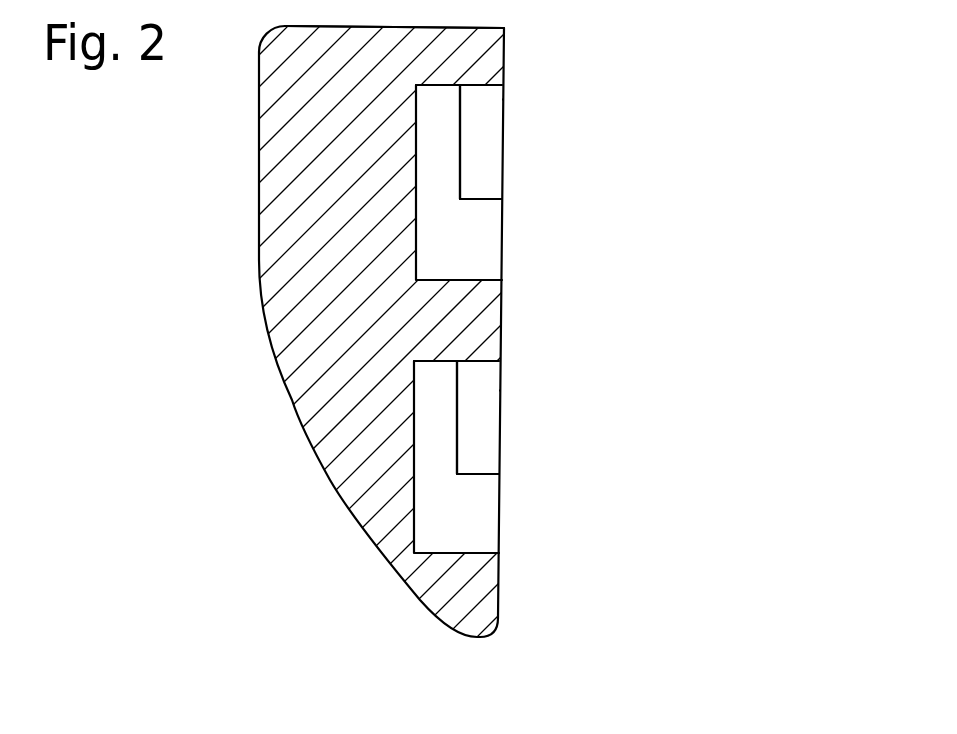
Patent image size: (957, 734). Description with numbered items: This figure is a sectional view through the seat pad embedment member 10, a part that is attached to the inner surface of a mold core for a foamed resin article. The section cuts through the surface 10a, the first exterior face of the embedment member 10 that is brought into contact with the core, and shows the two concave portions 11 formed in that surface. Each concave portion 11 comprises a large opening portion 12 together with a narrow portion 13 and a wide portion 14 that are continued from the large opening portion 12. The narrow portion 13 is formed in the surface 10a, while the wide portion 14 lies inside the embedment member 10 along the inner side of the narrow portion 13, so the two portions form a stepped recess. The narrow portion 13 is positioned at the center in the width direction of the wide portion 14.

The seat pad embedment member 10 is at (213, 240).
The surface 10a is at (505, 57).
The concave portion 11 is at (560, 319).
The large opening portion 12 is at (478, 244).
The narrow portion 13 is at (480, 158).
The wide portion 14 is at (585, 247).